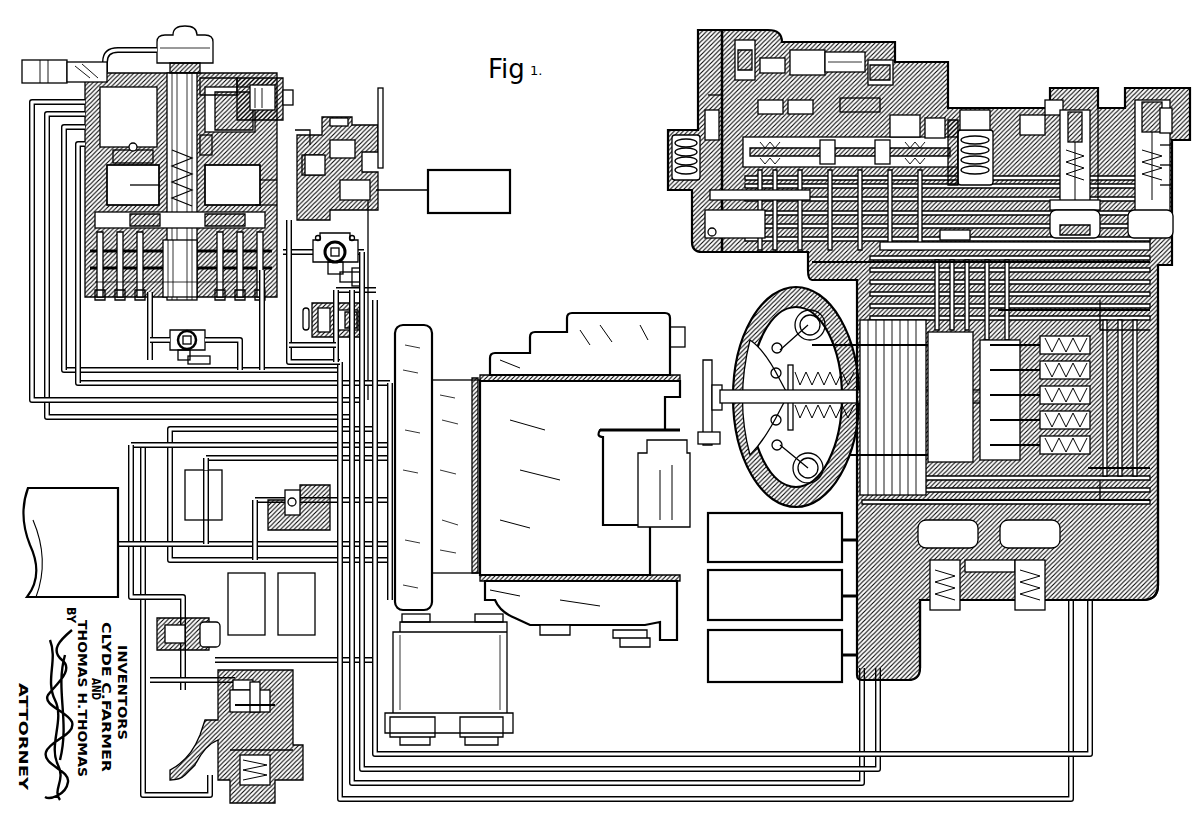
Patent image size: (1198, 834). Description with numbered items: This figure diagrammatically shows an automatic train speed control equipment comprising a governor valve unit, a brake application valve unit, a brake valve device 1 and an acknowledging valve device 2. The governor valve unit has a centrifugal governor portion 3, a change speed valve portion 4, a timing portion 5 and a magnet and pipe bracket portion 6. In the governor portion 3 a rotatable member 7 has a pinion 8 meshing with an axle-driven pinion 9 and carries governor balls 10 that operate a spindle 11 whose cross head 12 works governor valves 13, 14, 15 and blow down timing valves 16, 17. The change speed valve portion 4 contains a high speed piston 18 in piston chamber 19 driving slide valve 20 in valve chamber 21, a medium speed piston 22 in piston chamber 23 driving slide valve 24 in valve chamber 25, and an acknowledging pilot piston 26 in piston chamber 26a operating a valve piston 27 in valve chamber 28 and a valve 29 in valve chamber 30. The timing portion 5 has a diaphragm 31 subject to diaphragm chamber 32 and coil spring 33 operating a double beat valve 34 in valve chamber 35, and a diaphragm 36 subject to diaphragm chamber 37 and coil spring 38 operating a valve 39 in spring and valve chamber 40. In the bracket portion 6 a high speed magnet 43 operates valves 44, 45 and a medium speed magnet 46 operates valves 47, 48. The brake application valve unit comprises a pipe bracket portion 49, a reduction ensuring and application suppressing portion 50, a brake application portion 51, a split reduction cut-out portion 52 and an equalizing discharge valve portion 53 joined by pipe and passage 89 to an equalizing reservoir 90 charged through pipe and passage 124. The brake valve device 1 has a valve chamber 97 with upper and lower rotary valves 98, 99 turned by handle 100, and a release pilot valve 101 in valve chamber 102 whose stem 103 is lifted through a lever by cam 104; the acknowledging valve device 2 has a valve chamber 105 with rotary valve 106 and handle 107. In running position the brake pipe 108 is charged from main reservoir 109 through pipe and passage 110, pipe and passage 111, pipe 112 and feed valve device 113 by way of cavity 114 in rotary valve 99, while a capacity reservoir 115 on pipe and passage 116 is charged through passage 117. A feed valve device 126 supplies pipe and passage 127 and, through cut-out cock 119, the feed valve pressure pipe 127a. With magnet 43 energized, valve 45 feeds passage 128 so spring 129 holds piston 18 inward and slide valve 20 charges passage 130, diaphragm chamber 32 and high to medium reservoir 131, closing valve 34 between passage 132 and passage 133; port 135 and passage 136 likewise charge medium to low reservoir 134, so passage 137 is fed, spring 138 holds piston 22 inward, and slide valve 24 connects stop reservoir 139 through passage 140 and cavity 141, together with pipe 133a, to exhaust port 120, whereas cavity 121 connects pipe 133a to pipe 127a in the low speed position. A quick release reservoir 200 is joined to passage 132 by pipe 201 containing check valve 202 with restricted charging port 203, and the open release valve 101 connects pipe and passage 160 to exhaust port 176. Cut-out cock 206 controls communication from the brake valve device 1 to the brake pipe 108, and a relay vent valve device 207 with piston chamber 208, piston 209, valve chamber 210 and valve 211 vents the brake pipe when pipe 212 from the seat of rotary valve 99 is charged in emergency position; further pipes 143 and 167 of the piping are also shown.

The brake valve device 1 is at (268, 80).
The acknowledging valve device 2 is at (352, 128).
The centrifugal governor portion 3 is at (1150, 388).
The change speed valve portion 4 is at (916, 112).
The timing portion 5 is at (1104, 106).
The magnet and pipe bracket portion 6 is at (1148, 536).
The rotatable member 7 is at (775, 356).
The pinion 8 is at (712, 362).
The pinion 9 is at (709, 445).
The governor balls 10 is at (806, 312).
The spindle 11 is at (829, 375).
The cross head 12 is at (973, 362).
The governor valve 13 is at (1035, 398).
The governor valve 14 is at (1040, 377).
The governor valve 15 is at (1040, 420).
The blow down timing valve 16 is at (1150, 330).
The blow down timing valve 17 is at (1150, 466).
The piston 18 is at (953, 120).
The piston chamber 19 is at (972, 112).
The slide valve 20 is at (935, 118).
The valve chamber 21 is at (900, 115).
The piston 22 is at (708, 96).
The piston chamber 23 is at (705, 125).
The slide valve 24 is at (770, 114).
The valve chamber 25 is at (800, 114).
The piston 26 is at (735, 48).
The piston chamber 26a is at (735, 65).
The valve piston 27 is at (795, 50).
The valve chamber 28 is at (835, 52).
The valve 29 is at (890, 64).
The valve chamber 30 is at (895, 82).
The flexible diaphragm 31 is at (1050, 218).
The diaphragm chamber 32 is at (1052, 235).
The coil spring 33 is at (1050, 204).
The double beat valve 34 is at (1046, 108).
The valve chamber 35 is at (1080, 110).
The flexible diaphragm 36 is at (1146, 102).
The diaphragm chamber 37 is at (1162, 108).
The coil spring 38 is at (1176, 154).
The valve 39 is at (1176, 186).
The spring and valve chamber 40 is at (1176, 171).
The magnet 43 is at (1015, 495).
The valve 44 is at (990, 588).
The valve 45 is at (945, 598).
The magnet 46 is at (1120, 497).
The valve 47 is at (1030, 534).
The valve 48 is at (1030, 598).
The pipe bracket portion 49 is at (428, 342).
The brake pipe reduction ensuring and brake application suppressing portion 50 is at (450, 385).
The brake application portion 51 is at (530, 360).
The split reduction cut-out portion 52 is at (686, 496).
The equalizing discharge valve portion 53 is at (610, 632).
The pipe and passage 89 is at (302, 488).
The equalizing reservoir 90 is at (220, 498).
The valve chamber 97 is at (262, 186).
The upper rotary valve 98 is at (232, 185).
The lower rotary valve 99 is at (133, 185).
The handle 100 is at (106, 56).
The release pilot valve 101 is at (290, 82).
The valve chamber 102 is at (294, 90).
The stem 103 is at (238, 84).
The cam 104 is at (212, 70).
The valve chamber 105 is at (306, 130).
The rotary valve 106 is at (336, 120).
The handle 107 is at (384, 118).
The brake pipe 108 is at (273, 447).
The main reservoir 109 is at (72, 498).
The pipe and passage 110 is at (203, 542).
The pipe and passage 111 is at (399, 383).
The pipe 112 is at (230, 340).
The pressure reducing feed valve device 113 is at (200, 328).
The cavity 114 is at (130, 187).
The capacity reservoir 115 is at (312, 600).
The pipe and passage 116 is at (66, 80).
The passage 117 is at (272, 205).
The cut-out cock 119 is at (333, 303).
The atmospheric exhaust port 120 is at (710, 197).
The cavity 121 is at (838, 152).
The pipe and passage 124 is at (262, 300).
The feed or reducing valve device 126 is at (360, 250).
The pipe and passage 127 is at (380, 312).
The feed valve pressure pipe 127a is at (365, 658).
The passage 128 is at (951, 384).
The spring 129 is at (978, 130).
The passage 130 is at (1005, 435).
The high to medium reservoir 131 is at (708, 600).
The passage 132 is at (560, 748).
The passage 133 is at (1022, 112).
The pipe and passage 133a is at (605, 768).
The medium to low reservoir 134 is at (708, 675).
The port 135 is at (898, 152).
The passage 136 is at (912, 678).
The passage 137 is at (705, 226).
The spring 138 is at (672, 160).
The stop reservoir 139 is at (708, 545).
The passage 140 is at (390, 536).
The cavity 141 is at (850, 152).
The pipe 143 is at (110, 353).
The pipe and passage 160 is at (44, 60).
The pipe 167 is at (70, 340).
The exhaust port 176 is at (297, 133).
The quick release reservoir 200 is at (246, 632).
The pipe 201 is at (390, 480).
The check valve 202 is at (322, 530).
The restricted charging port 203 is at (272, 492).
The cut-out cock 206 is at (183, 602).
The relay vent valve device 207 is at (295, 690).
The piston chamber 208 is at (282, 790).
The piston 209 is at (300, 745).
The valve chamber 210 is at (295, 700).
The valve 211 is at (295, 712).
The pipe 212 is at (155, 330).